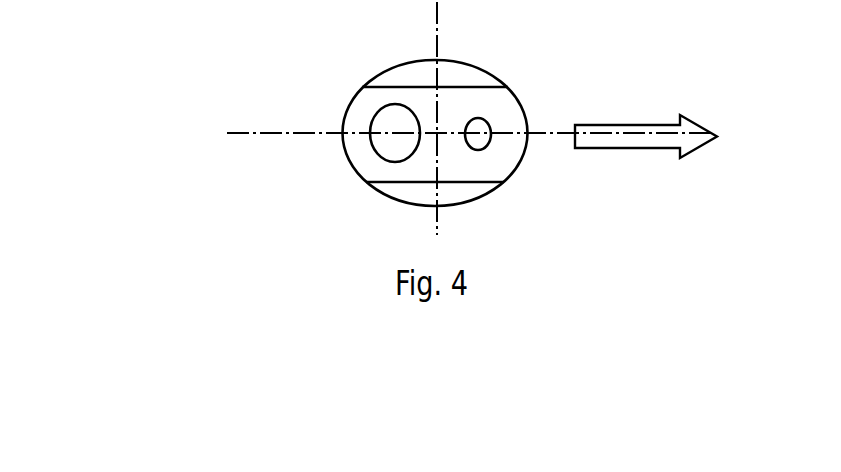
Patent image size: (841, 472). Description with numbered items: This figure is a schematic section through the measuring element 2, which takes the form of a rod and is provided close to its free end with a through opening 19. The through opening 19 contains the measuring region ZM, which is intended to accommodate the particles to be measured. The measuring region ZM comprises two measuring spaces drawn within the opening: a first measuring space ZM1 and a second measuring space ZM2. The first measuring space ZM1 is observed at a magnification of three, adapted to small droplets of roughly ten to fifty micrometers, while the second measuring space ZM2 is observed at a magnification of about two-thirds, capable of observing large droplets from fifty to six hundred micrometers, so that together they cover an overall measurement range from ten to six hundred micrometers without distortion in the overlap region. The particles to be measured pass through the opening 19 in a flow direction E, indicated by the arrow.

The measuring element 2 is at (520, 94).
The through opening 19 is at (357, 145).
The measuring region ZM is at (358, 108).
The first measuring space ZM1 is at (486, 146).
The second measuring space ZM2 is at (388, 143).
The flow direction E is at (638, 150).